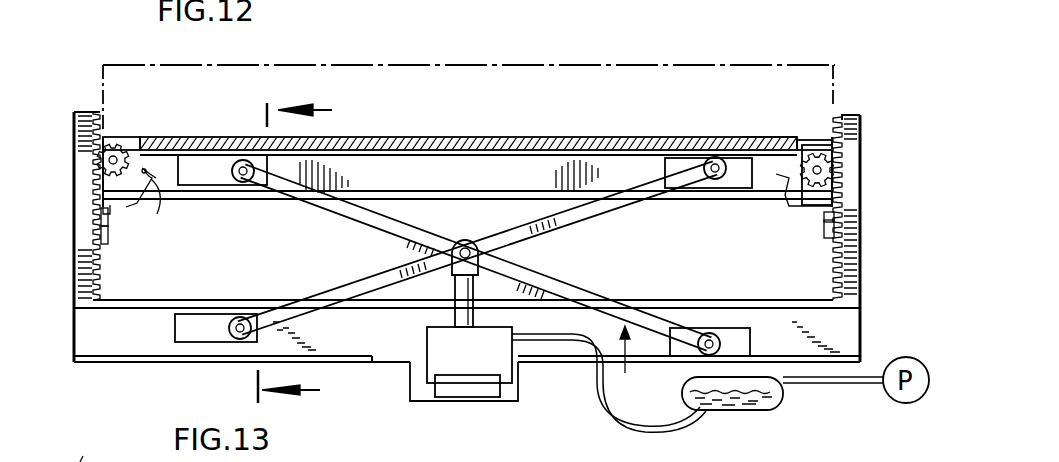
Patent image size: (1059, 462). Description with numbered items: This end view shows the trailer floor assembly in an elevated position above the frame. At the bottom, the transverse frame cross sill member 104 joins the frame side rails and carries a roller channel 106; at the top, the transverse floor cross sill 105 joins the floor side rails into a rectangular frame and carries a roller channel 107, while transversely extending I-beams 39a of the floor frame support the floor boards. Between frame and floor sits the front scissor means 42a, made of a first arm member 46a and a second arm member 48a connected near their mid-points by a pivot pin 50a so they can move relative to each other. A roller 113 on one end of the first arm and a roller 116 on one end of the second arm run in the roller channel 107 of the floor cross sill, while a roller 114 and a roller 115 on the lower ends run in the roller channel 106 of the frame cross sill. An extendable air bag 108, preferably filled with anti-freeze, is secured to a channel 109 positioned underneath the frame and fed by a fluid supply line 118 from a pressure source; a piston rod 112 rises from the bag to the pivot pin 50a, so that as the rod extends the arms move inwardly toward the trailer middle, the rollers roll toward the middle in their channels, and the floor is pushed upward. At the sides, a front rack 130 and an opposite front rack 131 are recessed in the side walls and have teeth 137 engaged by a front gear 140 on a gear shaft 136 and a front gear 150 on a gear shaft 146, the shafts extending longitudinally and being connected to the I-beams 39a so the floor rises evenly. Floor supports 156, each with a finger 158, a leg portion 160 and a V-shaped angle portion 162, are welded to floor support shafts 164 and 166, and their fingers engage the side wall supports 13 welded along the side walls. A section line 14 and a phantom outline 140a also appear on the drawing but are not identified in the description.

In FIG. 12, the side wall support 13 is at (100, 233).
In FIG. 12, the section line 14 is at (311, 238).
In FIG. 12, the I-beam 39a is at (758, 140).
In FIG. 12, the front scissor means 42a is at (642, 360).
In FIG. 12, the first arm member 46a is at (382, 203).
In FIG. 12, the second arm member 48a is at (327, 300).
In FIG. 12, the pivot pin 50a is at (465, 247).
In FIG. 12, the frame cross sill member 104 is at (98, 340).
In FIG. 12, the floor cross sill 105 is at (505, 172).
In FIG. 12, the roller channel 106 is at (193, 328).
In FIG. 12, the roller channel 107 is at (192, 173).
In FIG. 12, the air bag 108 is at (487, 362).
In FIG. 12, the channel 109 is at (450, 401).
In FIG. 12, the piston rod 112 is at (457, 315).
In FIG. 12, the roller 113 is at (243, 160).
In FIG. 12, the roller 114 is at (710, 340).
In FIG. 12, the roller 115 is at (240, 338).
In FIG. 12, the roller 116 is at (717, 157).
In FIG. 12, the fluid supply line 118 is at (644, 425).
In FIG. 12, the front rack 130 is at (78, 111).
In FIG. 13, the front rack 130 is at (82, 446).
In FIG. 12, the front rack 131 is at (850, 115).
In FIG. 12, the gear shaft 136 is at (116, 156).
In FIG. 12, the teeth 137 is at (97, 272).
In FIG. 12, the front gear 140 is at (82, 155).
In FIG. 12, the platform outline 140a is at (568, 140).
In FIG. 12, the gear shaft 146 is at (820, 168).
In FIG. 12, the front gear 150 is at (832, 147).
In FIG. 12, the floor support 156 is at (100, 182).
In FIG. 12, the finger 158 is at (100, 208).
In FIG. 12, the leg portion 160 is at (128, 220).
In FIG. 12, the angle portion 162 is at (160, 218).
In FIG. 12, the support shaft 164 is at (153, 182).
In FIG. 12, the support shaft 166 is at (783, 160).